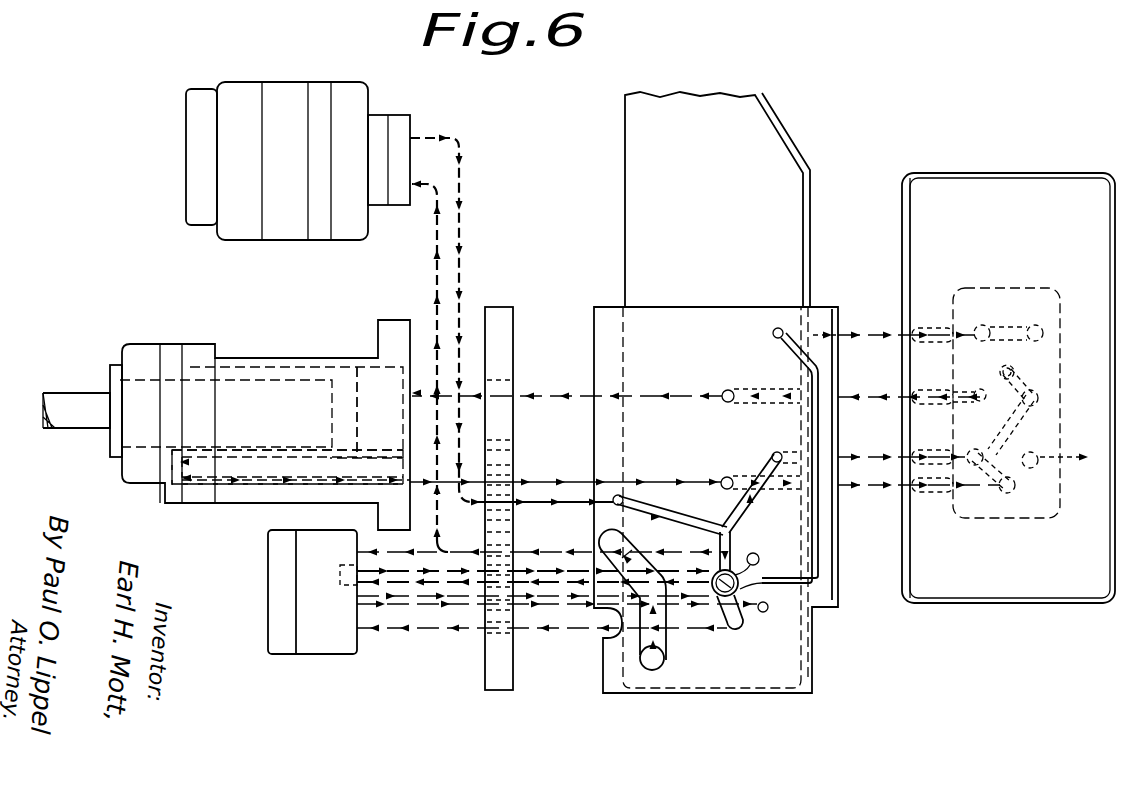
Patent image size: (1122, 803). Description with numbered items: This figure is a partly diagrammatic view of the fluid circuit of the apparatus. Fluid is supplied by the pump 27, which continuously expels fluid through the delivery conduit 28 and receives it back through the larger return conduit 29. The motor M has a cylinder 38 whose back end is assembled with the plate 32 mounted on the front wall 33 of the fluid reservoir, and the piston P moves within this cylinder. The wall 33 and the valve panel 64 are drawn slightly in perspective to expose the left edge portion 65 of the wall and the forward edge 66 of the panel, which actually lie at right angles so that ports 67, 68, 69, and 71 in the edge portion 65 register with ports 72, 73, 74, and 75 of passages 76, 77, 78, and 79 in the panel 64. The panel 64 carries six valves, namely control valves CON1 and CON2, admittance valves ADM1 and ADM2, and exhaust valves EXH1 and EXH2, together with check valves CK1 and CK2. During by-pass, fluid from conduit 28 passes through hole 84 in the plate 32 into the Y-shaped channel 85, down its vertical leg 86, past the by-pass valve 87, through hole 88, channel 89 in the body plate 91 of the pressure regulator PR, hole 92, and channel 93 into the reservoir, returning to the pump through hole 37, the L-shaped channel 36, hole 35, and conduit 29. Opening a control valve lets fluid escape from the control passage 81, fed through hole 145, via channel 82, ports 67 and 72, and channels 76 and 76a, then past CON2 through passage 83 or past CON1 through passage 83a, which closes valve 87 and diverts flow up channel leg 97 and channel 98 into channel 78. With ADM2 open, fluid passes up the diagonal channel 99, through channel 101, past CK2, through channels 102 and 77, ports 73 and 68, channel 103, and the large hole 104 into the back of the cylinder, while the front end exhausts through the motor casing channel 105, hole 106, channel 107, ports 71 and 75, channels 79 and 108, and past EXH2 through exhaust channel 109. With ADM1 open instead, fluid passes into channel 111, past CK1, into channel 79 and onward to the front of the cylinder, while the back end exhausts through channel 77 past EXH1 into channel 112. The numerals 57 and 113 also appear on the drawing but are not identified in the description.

The pump 27 is at (291, 93).
The conduit 28 is at (462, 260).
The conduit 29 is at (437, 269).
The output shaft 57 is at (66, 404).
The cylinder 38 is at (300, 359).
The motor casing channel 105 is at (268, 487).
The pressure regulator 113 is at (268, 595).
The body plate 91 is at (318, 645).
The channel 89 is at (357, 561).
The hole 92 is at (482, 558).
The hole 145 is at (480, 588).
The hole 88 is at (510, 591).
The plate 32 is at (496, 690).
The large hole 104 is at (510, 448).
The hole 106 is at (510, 473).
The hole 84 is at (510, 522).
The hole 35 is at (510, 536).
The channel 103 is at (752, 391).
The port 68 is at (800, 407).
The channel 107 is at (728, 477).
The port 69 is at (799, 449).
The Y-shaped channel 85 is at (697, 532).
The left edge portion 65 is at (810, 271).
The front wall 33 is at (690, 693).
The port 67 is at (823, 328).
The channel 82 is at (777, 328).
The passage 81 is at (818, 551).
The port 71 is at (802, 489).
The channel 98 is at (775, 452).
The channel leg 97 is at (742, 523).
The vertical leg 86 is at (731, 556).
The channel 93 is at (757, 558).
The by-pass valve 87 is at (740, 584).
The L-shaped channel 36 is at (665, 641).
The hole 37 is at (664, 665).
The valve panel 64 is at (1034, 188).
The forward edge 66 is at (908, 275).
The discharge passage 83a is at (972, 340).
The port 72 is at (918, 330).
The passage 76 is at (968, 339).
The channel 76a is at (1010, 326).
The passage 83 is at (1042, 341).
The port 73 is at (918, 393).
The passage 77 is at (918, 400).
The channel 102 is at (990, 389).
The channel 112 is at (973, 386).
The channel 101 is at (1028, 388).
The diagonal channel 99 is at (1022, 431).
The passage 78 is at (962, 452).
The port 74 is at (918, 457).
The channel 111 is at (999, 470).
The exhaust channel 109 is at (1045, 452).
The port 75 is at (918, 491).
The passage 79 is at (950, 492).
The channel 108 is at (1016, 492).
The motor M is at (254, 392).
The motor piston P is at (365, 372).
The pressure regulator device PR is at (302, 560).
The control valve CON1 is at (970, 326).
The control valve CON2 is at (1040, 326).
The check valve CK1 is at (1000, 495).
The check valve CK2 is at (1020, 360).
The admittance valve ADM1 is at (966, 463).
The admittance valve ADM2 is at (1040, 404).
The exhaust valve EXH1 is at (978, 402).
The exhaust valve EXH2 is at (1040, 466).